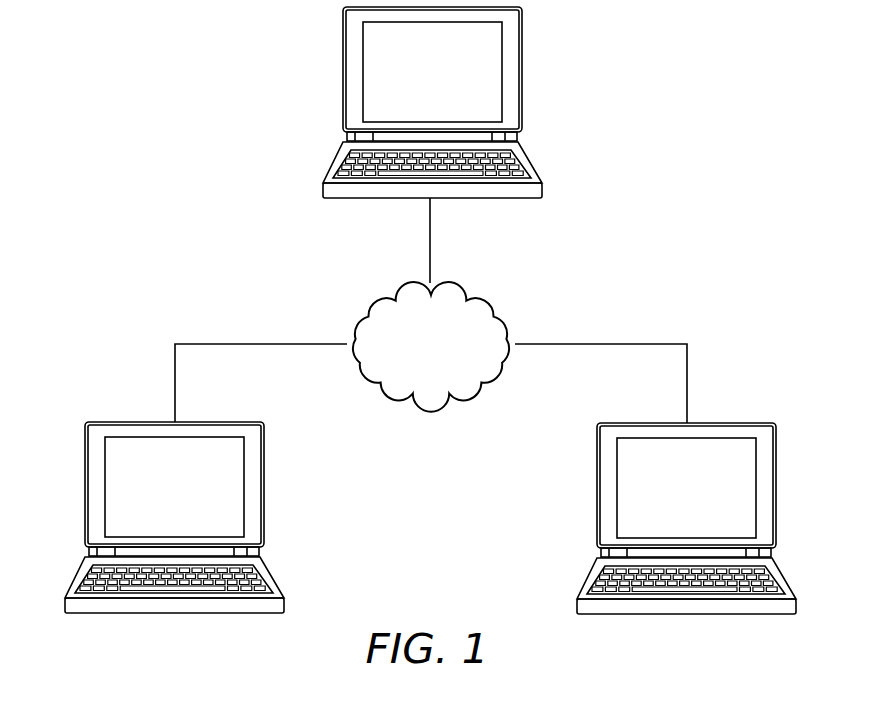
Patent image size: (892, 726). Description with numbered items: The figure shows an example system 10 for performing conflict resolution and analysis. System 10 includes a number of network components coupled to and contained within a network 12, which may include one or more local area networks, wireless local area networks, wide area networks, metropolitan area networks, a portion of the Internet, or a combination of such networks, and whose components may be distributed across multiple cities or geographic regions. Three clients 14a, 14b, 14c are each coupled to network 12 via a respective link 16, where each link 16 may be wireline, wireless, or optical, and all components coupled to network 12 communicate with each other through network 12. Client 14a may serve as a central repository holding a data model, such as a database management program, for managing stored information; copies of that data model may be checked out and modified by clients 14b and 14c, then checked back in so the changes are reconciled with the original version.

The system 10 is at (662, 101).
The network 12 is at (393, 289).
The client 14a is at (412, 87).
The client 14b is at (174, 517).
The client 14c is at (686, 518).
The link 16 is at (431, 242).